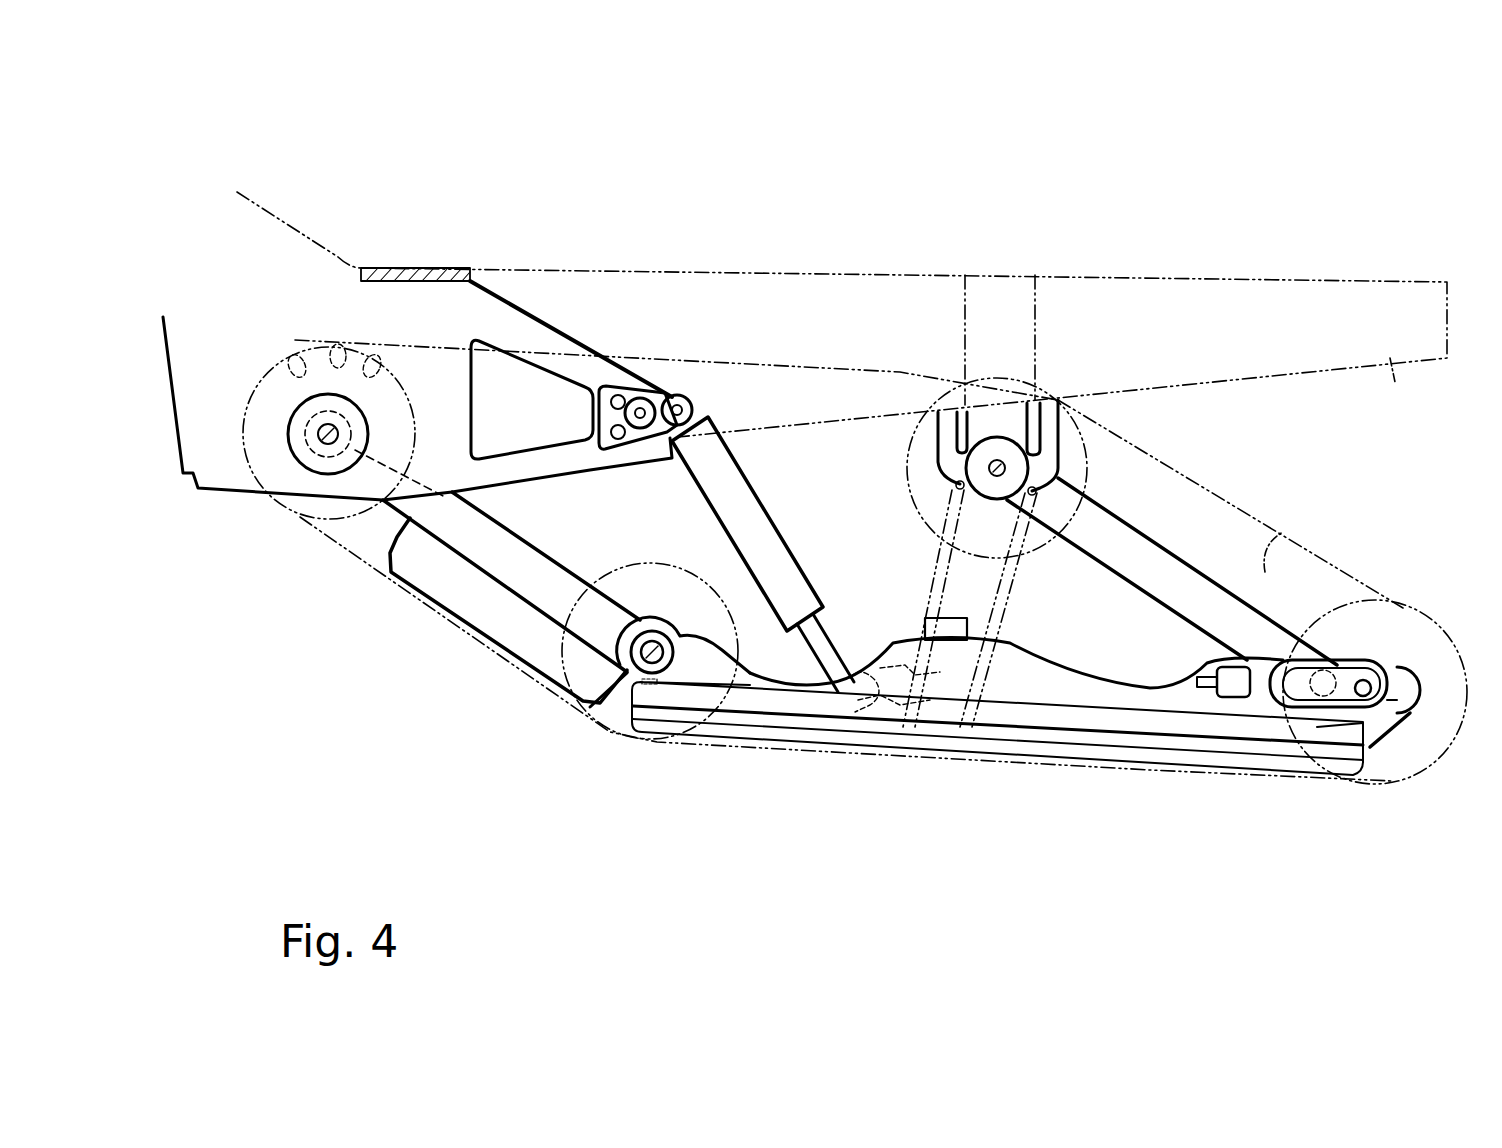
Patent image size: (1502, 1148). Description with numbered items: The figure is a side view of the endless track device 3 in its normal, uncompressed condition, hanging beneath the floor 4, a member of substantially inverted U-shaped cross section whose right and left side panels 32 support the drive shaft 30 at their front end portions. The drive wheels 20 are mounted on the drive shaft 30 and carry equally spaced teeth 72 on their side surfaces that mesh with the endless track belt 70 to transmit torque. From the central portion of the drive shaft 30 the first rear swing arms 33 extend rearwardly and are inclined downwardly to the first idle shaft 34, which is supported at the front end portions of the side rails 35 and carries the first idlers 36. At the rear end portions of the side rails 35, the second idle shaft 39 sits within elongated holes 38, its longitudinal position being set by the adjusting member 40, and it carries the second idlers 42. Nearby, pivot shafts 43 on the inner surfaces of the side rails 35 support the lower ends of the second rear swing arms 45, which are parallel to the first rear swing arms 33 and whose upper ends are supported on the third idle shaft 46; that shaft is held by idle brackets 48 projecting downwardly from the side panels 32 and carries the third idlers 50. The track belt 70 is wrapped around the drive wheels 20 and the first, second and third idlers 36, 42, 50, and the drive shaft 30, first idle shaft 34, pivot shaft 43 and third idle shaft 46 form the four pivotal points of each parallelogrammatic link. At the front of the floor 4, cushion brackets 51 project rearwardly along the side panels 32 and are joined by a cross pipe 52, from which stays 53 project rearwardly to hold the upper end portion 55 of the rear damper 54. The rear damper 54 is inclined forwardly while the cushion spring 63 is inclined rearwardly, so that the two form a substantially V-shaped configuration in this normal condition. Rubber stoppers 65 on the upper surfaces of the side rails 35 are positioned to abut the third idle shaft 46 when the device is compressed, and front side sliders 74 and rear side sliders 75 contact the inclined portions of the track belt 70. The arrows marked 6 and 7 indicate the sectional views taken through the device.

The endless track device 3 is at (392, 656).
The floor 4 is at (1230, 272).
The section line 6 is at (598, 655).
The section line 7 is at (880, 217).
The drive wheels 20 is at (248, 487).
The drive shaft 30 is at (325, 452).
The side panels 32 is at (1395, 382).
The first rear swing arms 33 is at (493, 537).
The first idle shaft 34 is at (627, 678).
The side rails 35 is at (757, 684).
The first idlers 36 is at (660, 565).
The elongated holes 38 is at (1398, 686).
The second idle shaft 39 is at (1385, 668).
The adjusting member 40 is at (1230, 697).
The second idlers 42 is at (1400, 610).
The pivot shafts 43 is at (1328, 656).
The second rear swing arms 45 is at (1165, 550).
The third idle shaft 46 is at (958, 470).
The idle brackets 48 is at (1062, 418).
The third idlers 50 is at (1038, 548).
The cushion brackets 51 is at (556, 327).
The cross pipe 52 is at (641, 398).
The stays 53 is at (662, 396).
The rear damper 54 is at (760, 515).
The upper end portion 55 is at (690, 402).
The cushion spring 63 is at (1013, 593).
The rubber stoppers 65 is at (953, 618).
The endless track belt 70 is at (1270, 566).
The teeth 72 is at (297, 361).
The front side sliders 74 is at (503, 623).
The rear side sliders 75 is at (1127, 737).